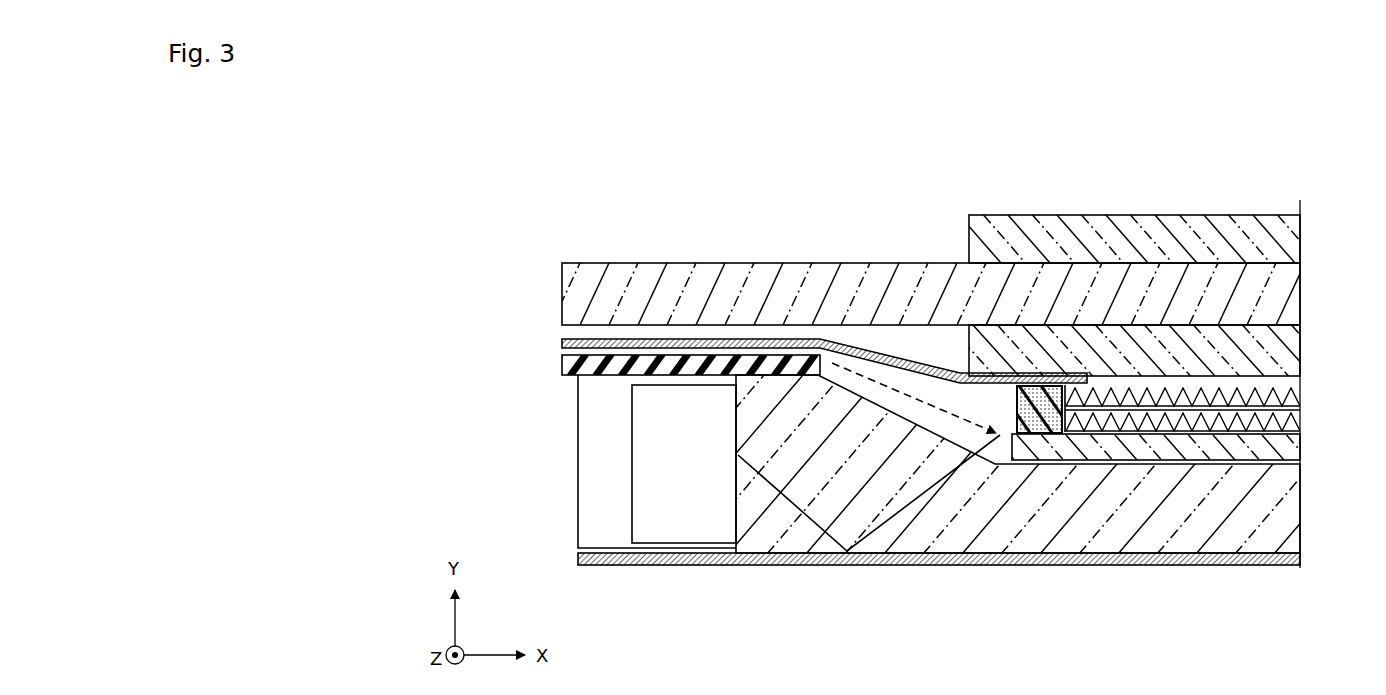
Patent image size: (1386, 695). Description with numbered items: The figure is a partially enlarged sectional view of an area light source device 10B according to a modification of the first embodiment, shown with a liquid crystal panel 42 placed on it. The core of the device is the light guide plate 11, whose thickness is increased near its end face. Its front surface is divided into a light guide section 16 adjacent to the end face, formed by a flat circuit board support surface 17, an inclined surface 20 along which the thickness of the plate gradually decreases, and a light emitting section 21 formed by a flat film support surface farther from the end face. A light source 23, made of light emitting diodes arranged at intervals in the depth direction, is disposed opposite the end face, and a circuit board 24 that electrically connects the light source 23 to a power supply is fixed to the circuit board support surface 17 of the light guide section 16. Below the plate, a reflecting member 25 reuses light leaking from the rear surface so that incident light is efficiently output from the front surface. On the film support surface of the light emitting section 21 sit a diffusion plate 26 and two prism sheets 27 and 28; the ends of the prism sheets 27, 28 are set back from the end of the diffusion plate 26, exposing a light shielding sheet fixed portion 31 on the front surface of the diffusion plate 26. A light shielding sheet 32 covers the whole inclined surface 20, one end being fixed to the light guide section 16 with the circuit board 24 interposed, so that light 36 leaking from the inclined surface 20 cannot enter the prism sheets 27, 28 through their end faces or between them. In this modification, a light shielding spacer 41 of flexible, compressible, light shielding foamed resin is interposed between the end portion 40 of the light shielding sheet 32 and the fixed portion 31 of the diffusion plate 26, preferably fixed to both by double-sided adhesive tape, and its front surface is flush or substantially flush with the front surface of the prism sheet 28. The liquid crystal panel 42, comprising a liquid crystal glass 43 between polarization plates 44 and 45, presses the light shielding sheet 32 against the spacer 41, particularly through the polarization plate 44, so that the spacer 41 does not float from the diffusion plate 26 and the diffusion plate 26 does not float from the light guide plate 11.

The area light source device 10B is at (563, 547).
The light guide plate 11 is at (1222, 525).
The light guide section 16 is at (765, 530).
The circuit board support surface 17 is at (912, 537).
The inclined surface 20 is at (877, 430).
The light emitting section 21 is at (1168, 525).
The light source 23 is at (679, 525).
The circuit board 24 is at (562, 343).
The reflecting member 25 is at (805, 565).
The diffusion plate 26 is at (1290, 448).
The prism sheet 27 is at (1293, 412).
The prism sheet 28 is at (1288, 390).
The light shielding sheet fixed portion 31 is at (1048, 436).
The light shielding sheet 32 is at (868, 345).
The light 36 is at (977, 457).
The end portion of the light shielding sheet 40 is at (988, 395).
The light shielding spacer 41 is at (1033, 432).
The liquid crystal panel 42 is at (1284, 206).
The liquid crystal glass 43 is at (1290, 294).
The polarization plate 44 is at (1285, 345).
The polarization plate 45 is at (1290, 240).